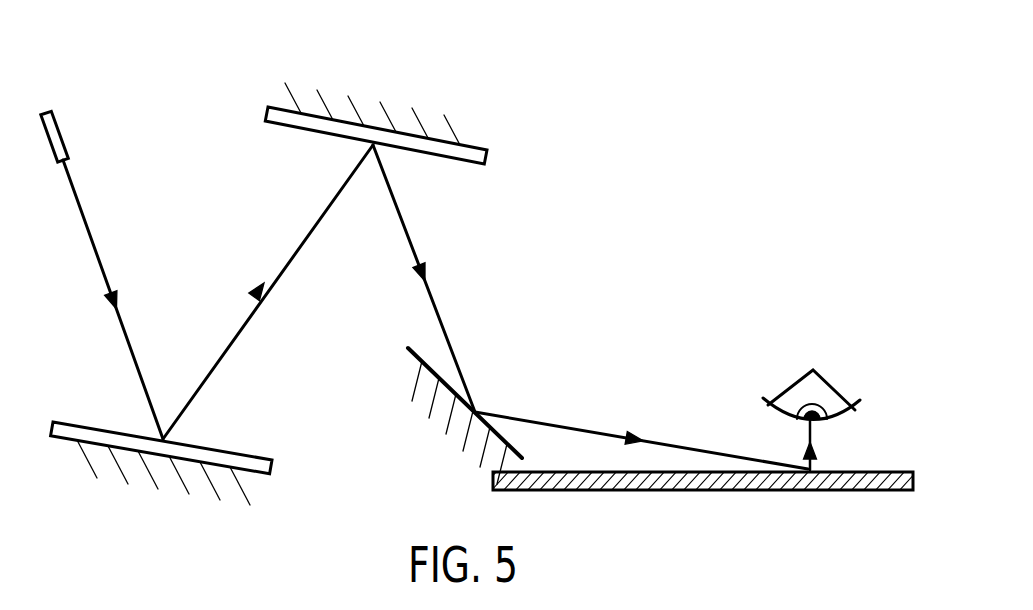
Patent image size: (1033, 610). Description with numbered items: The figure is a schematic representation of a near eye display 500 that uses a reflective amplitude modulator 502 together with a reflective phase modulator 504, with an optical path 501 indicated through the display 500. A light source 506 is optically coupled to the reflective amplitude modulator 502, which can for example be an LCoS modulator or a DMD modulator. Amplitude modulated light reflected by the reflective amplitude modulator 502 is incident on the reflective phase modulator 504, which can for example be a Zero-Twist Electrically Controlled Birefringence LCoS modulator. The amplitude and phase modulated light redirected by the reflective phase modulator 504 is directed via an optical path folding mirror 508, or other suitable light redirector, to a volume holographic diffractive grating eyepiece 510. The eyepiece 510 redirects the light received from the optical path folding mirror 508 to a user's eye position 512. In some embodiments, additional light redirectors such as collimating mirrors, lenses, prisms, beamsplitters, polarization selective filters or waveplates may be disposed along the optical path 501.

The near eye display 500 is at (452, 46).
The optical path 501 is at (88, 222).
The reflective amplitude modulator 502 is at (92, 423).
The reflective phase modulator 504 is at (460, 170).
The light source 506 is at (48, 110).
The optical path folding mirror 508 is at (425, 360).
The volume holographic diffractive grating eyepiece 510 is at (858, 470).
The user's eye position 512 is at (772, 415).